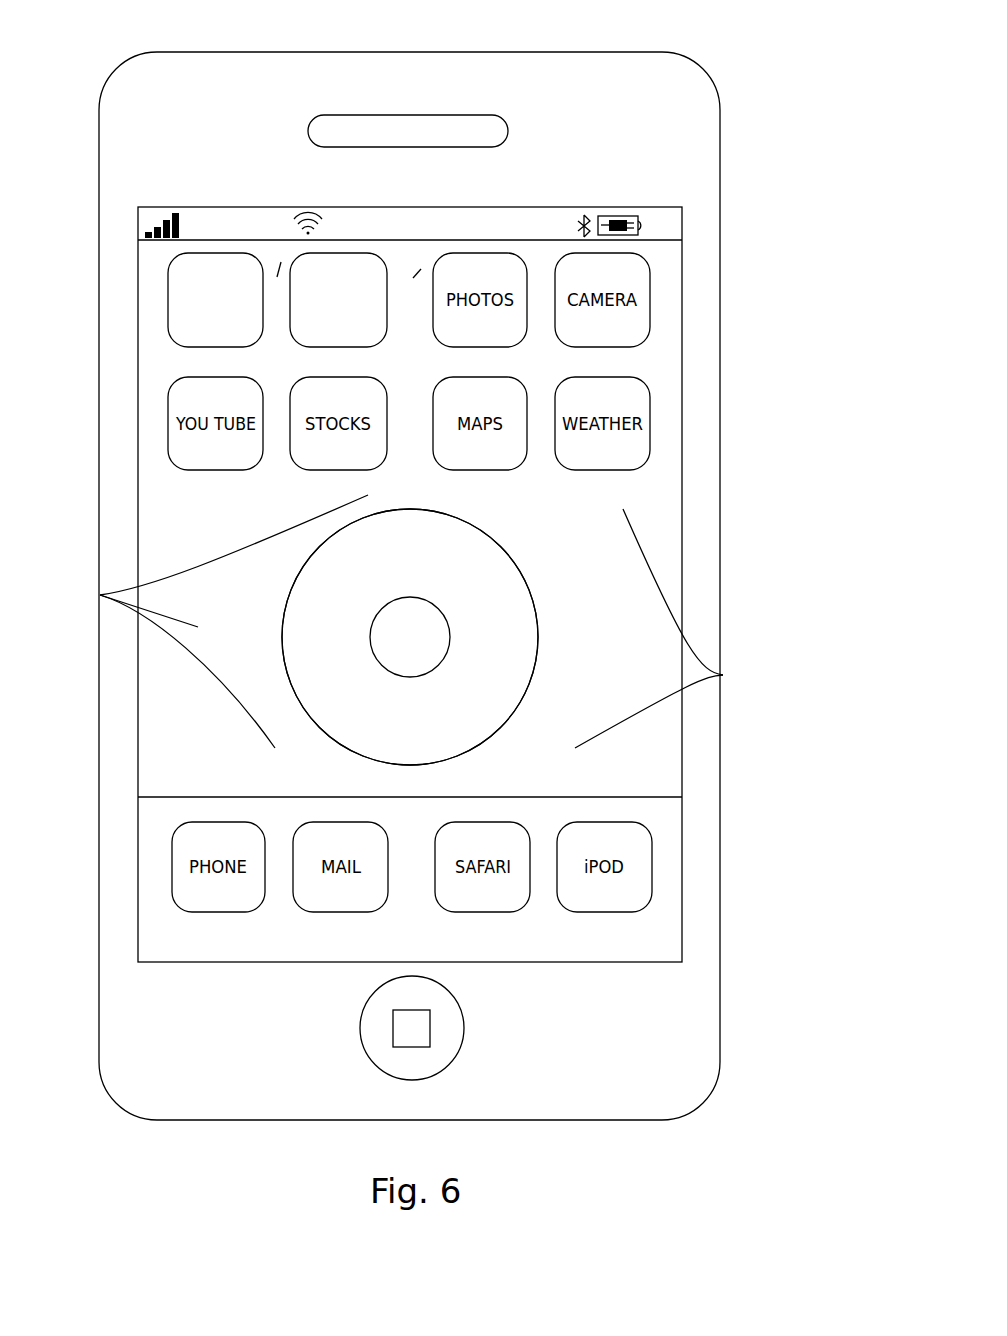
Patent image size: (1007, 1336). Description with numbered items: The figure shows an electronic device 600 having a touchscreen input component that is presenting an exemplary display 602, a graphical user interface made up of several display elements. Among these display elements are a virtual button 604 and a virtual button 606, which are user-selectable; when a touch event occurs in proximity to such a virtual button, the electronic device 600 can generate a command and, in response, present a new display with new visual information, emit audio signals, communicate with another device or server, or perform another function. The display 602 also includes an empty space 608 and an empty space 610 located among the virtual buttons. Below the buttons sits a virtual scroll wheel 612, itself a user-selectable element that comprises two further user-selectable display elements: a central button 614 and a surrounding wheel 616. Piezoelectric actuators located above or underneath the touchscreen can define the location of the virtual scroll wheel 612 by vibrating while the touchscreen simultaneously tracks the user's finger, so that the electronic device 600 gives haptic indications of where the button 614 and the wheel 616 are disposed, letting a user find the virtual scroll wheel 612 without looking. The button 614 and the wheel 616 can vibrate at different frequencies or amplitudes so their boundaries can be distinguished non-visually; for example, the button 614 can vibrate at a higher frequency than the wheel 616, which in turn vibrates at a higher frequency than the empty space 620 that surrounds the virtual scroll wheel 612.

The electronic device 600 is at (748, 72).
The display 602 is at (681, 313).
The virtual button 604 is at (294, 344).
The virtual button 606 is at (170, 340).
The empty space 608 is at (421, 269).
The empty space 610 is at (281, 262).
The virtual scroll wheel 612 is at (522, 568).
The button 614 is at (435, 647).
The wheel 616 is at (520, 620).
The empty space 620 is at (100, 595).